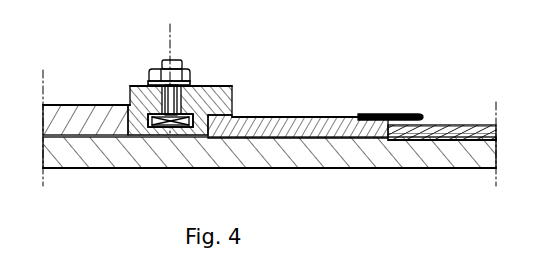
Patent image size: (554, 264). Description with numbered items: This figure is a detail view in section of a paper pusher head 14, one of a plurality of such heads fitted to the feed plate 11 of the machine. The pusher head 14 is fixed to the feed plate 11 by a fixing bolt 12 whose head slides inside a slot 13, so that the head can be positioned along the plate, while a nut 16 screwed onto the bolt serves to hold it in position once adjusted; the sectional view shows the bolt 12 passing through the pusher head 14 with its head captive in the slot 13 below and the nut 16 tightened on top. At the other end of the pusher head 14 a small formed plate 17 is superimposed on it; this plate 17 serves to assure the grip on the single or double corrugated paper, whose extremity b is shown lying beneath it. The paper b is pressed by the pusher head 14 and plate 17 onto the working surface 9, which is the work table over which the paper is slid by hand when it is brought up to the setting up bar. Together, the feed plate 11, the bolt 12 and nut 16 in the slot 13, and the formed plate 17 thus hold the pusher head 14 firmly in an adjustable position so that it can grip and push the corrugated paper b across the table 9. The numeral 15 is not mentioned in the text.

The work table 9 is at (300, 148).
The feed plate 11 is at (118, 116).
The fixing bolt 12 is at (175, 62).
The slot 13 is at (197, 103).
The paper pusher head 14 is at (245, 120).
The nut 15 is at (149, 84).
The nut 16 is at (161, 82).
The small formed plate 17 is at (403, 114).
The extremity of the corrugated paper b is at (450, 127).